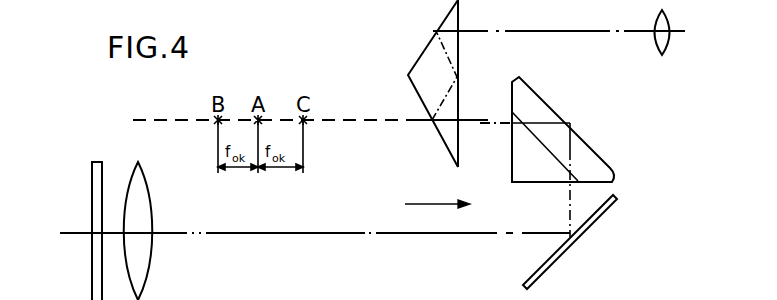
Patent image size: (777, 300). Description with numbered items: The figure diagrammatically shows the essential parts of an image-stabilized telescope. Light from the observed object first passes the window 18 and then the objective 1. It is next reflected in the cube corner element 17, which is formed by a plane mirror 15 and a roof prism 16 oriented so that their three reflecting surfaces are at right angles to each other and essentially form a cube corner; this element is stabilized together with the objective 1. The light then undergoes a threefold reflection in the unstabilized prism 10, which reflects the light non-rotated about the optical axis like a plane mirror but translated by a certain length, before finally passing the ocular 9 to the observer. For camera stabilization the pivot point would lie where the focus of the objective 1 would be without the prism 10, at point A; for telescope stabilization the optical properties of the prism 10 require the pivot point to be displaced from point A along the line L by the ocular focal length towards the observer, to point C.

The objective 1 is at (150, 201).
The ocular 9 is at (662, 52).
The threefold reflecting prism 10 is at (424, 47).
The plane mirror 15 is at (594, 228).
The roof prism 16 is at (553, 102).
The cube corner element 17 is at (422, 206).
The window 18 is at (92, 201).
The line L is at (397, 119).